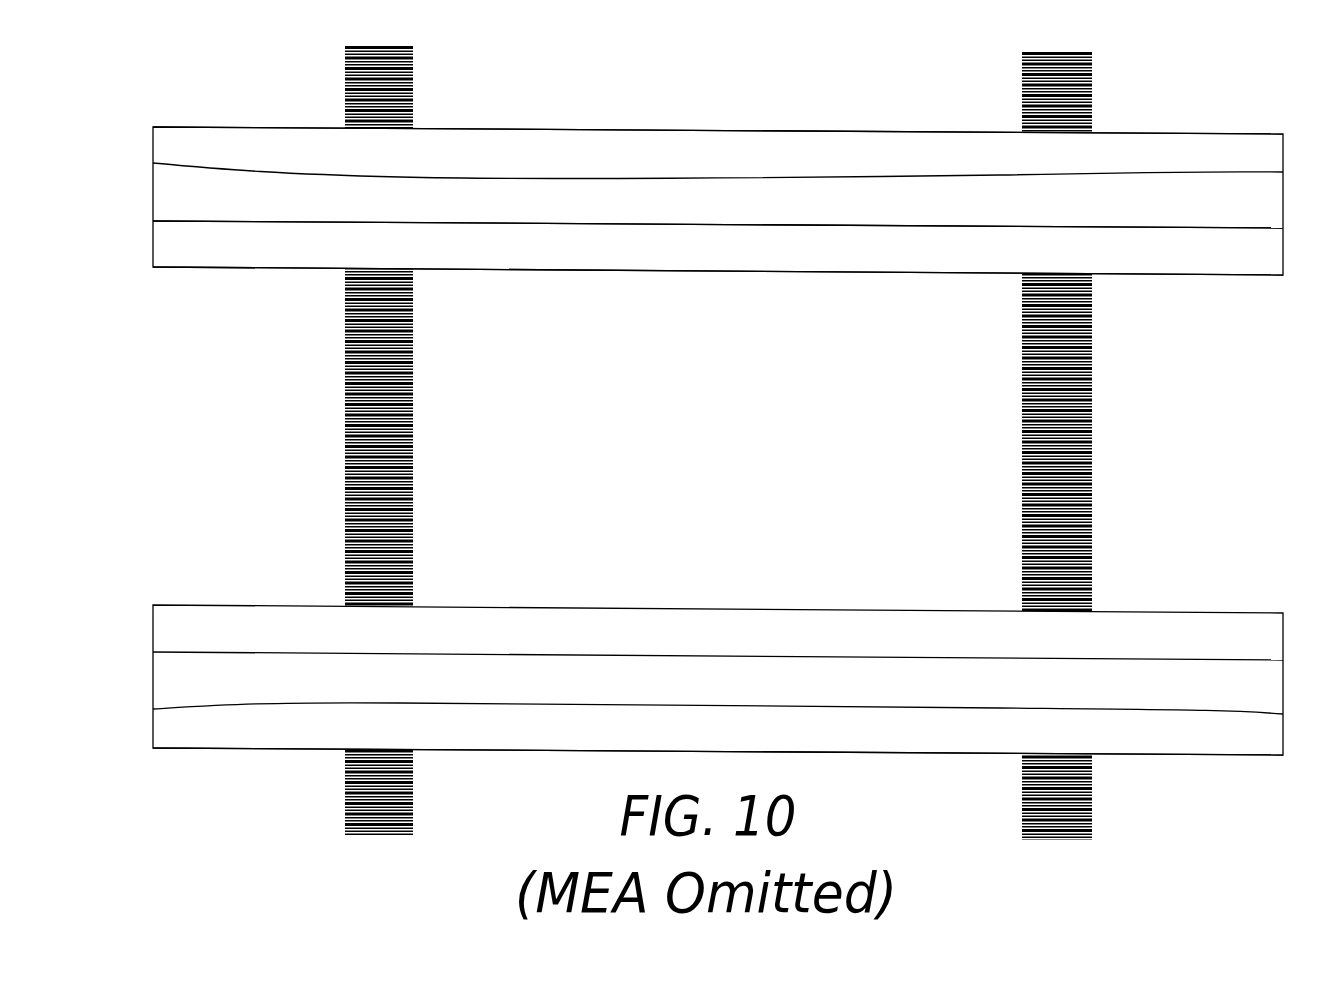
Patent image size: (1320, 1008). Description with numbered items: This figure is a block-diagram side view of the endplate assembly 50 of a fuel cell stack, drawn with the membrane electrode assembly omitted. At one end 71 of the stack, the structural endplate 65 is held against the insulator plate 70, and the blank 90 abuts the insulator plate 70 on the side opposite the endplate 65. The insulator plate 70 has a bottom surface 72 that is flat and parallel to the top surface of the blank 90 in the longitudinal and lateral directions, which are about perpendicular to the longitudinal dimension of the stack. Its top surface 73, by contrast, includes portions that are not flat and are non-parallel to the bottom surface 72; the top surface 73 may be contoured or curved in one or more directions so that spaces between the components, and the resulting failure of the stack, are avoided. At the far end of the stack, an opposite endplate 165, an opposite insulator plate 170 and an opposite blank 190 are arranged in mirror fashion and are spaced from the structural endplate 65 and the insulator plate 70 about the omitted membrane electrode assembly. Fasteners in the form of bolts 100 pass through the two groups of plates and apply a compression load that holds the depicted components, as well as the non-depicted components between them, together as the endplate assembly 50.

The endplate assembly 50 is at (246, 370).
The structural endplate 65 is at (718, 150).
The insulator plate 70 is at (718, 207).
The end of fuel cell stack 71 is at (830, 124).
The bottom surface of insulator plate 72 is at (1141, 242).
The top surface of insulator plate 73 is at (1138, 170).
The cooler blank 90 is at (718, 254).
The bolts 100 is at (1100, 472).
The opposite endplate 165 is at (718, 732).
The opposite insulator plate 170 is at (718, 689).
The opposite blank 190 is at (718, 639).